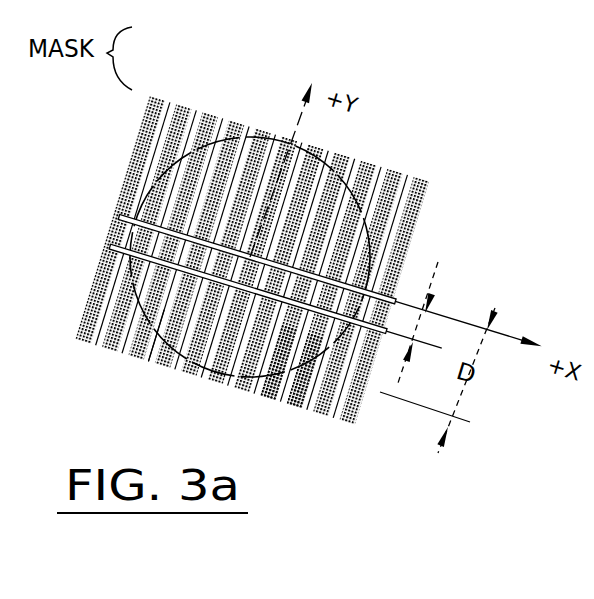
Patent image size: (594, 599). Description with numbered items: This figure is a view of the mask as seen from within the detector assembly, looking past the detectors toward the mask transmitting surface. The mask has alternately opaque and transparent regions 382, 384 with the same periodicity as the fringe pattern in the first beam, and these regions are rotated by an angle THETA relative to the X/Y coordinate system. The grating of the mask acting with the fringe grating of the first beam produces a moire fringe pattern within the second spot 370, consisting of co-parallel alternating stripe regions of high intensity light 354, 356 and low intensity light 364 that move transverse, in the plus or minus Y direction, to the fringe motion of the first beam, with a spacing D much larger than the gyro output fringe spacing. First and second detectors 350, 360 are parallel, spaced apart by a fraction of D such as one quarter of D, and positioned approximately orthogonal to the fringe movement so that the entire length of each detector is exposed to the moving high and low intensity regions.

The first detector 350 is at (125, 214).
The second detector 360 is at (118, 245).
The stripe region of high intensity light 354 is at (373, 272).
The stripe region of high intensity light 356 is at (300, 380).
The stripe region of low intensity light 364 is at (185, 377).
The second spot 370 is at (195, 377).
The opaque region of mask 382 is at (231, 122).
The transparent region of mask 384 is at (204, 112).